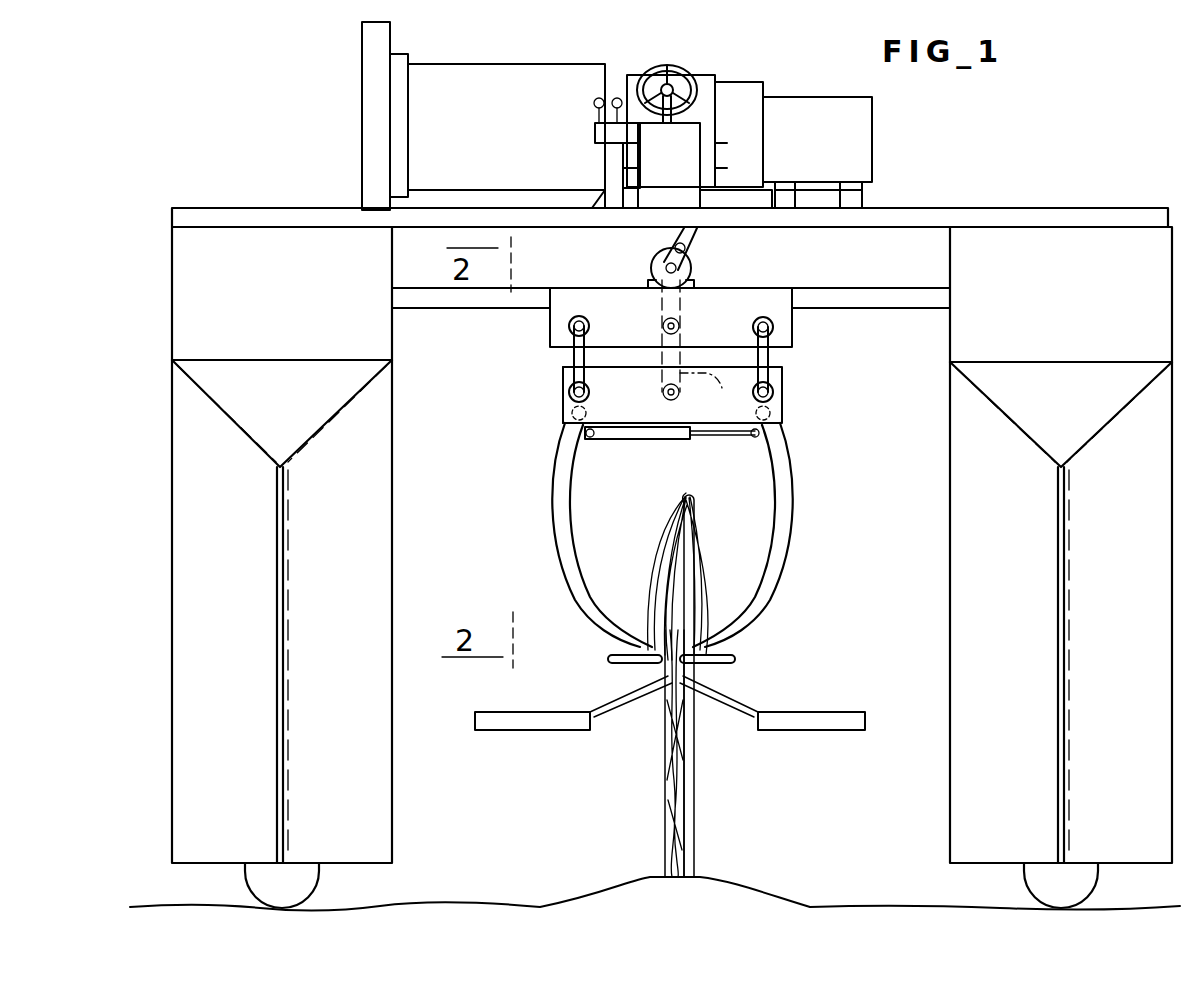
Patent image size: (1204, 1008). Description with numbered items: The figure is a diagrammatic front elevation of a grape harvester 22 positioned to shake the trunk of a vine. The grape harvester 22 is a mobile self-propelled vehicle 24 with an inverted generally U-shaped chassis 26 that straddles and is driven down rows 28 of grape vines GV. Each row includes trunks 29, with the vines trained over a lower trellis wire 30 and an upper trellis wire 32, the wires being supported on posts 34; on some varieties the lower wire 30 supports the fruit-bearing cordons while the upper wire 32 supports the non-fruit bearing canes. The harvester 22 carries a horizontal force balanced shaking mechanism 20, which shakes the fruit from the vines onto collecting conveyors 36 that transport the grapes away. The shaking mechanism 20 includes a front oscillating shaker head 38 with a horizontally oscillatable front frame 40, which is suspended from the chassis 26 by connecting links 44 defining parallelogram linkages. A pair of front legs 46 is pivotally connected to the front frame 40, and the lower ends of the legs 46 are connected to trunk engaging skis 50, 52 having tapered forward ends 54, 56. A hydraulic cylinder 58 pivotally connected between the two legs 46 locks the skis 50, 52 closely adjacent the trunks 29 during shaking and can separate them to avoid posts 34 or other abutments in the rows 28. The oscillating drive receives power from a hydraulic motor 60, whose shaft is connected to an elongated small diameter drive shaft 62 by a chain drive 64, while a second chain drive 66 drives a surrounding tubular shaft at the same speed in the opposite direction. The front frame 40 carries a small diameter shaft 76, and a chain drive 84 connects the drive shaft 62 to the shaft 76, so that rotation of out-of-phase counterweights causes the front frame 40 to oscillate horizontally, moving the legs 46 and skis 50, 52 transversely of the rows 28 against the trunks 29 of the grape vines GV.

The shaking mechanism 20 is at (680, 480).
The grape harvester 22 is at (1036, 132).
The mobile self-propelled vehicle 24 is at (166, 214).
The chassis 26 is at (1080, 208).
The rows 28 is at (660, 877).
The trunks 29 is at (665, 773).
The lower trellis wire 30 is at (660, 600).
The upper trellis wire 32 is at (686, 493).
The posts 34 is at (697, 762).
The collecting conveyors 36 is at (480, 712).
The front oscillating shaker head 38 is at (795, 397).
The front frame 40 is at (563, 385).
The connecting links 44 is at (568, 355).
The front legs 46 is at (550, 487).
The trunk engaging ski 50 is at (640, 653).
The trunk engaging ski 52 is at (712, 652).
The tapered forward end 54 is at (612, 665).
The tapered forward end 56 is at (735, 661).
The hydraulic cylinder 58 is at (673, 441).
The hydraulic motor 60 is at (650, 263).
The drive shaft 62 is at (662, 326).
The chain drive 64 is at (682, 310).
The second chain drive 66 is at (690, 255).
The small diameter shaft 76 is at (663, 393).
The chain drive 84 is at (709, 399).
The grape vines GV is at (661, 515).